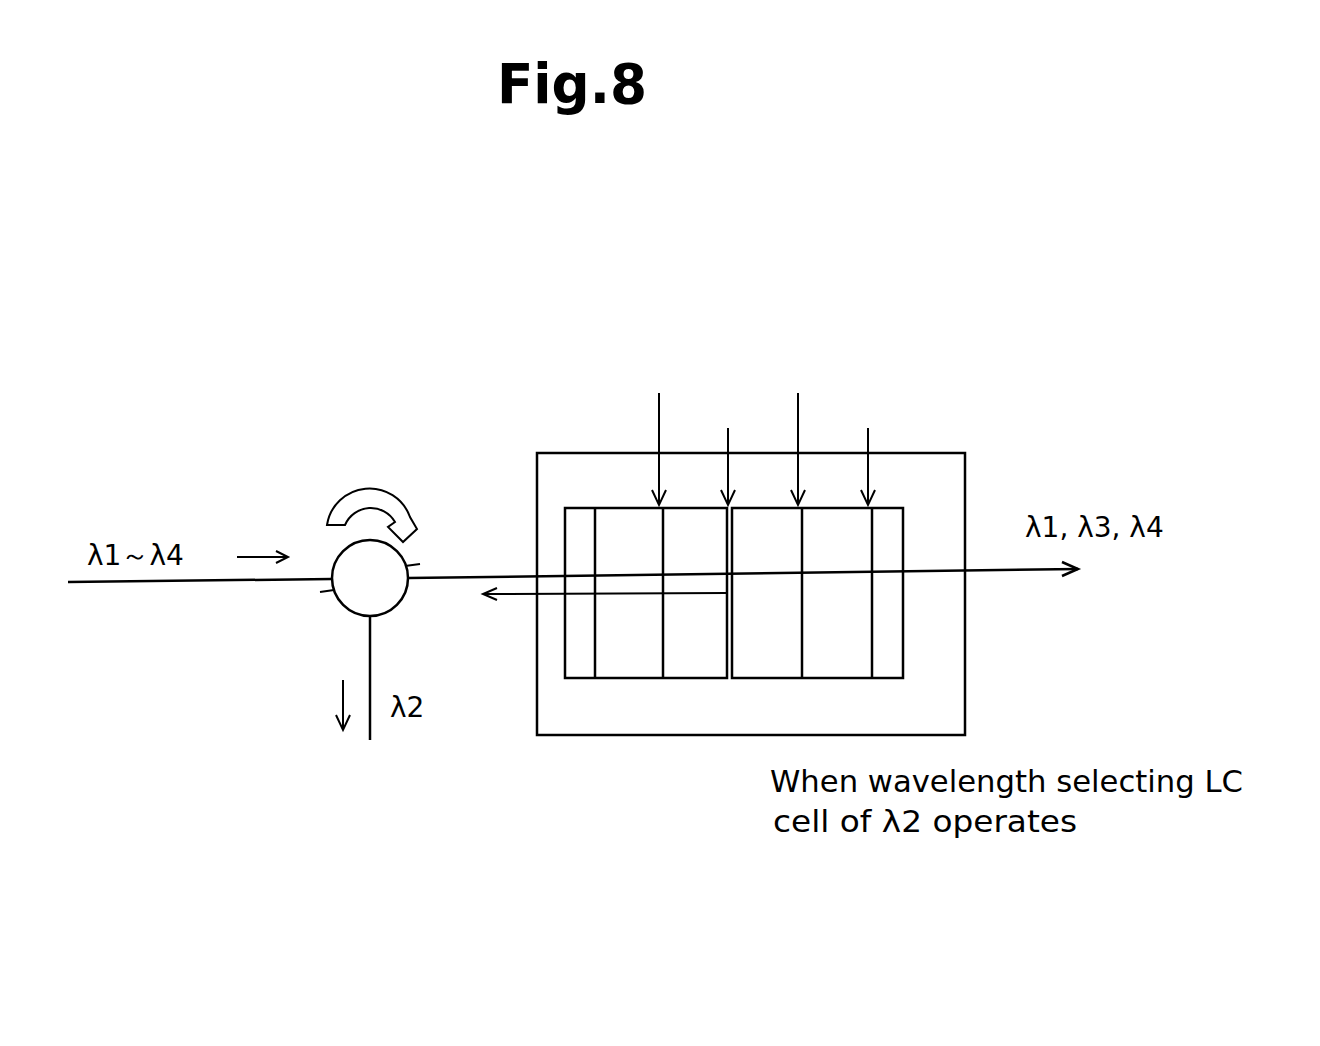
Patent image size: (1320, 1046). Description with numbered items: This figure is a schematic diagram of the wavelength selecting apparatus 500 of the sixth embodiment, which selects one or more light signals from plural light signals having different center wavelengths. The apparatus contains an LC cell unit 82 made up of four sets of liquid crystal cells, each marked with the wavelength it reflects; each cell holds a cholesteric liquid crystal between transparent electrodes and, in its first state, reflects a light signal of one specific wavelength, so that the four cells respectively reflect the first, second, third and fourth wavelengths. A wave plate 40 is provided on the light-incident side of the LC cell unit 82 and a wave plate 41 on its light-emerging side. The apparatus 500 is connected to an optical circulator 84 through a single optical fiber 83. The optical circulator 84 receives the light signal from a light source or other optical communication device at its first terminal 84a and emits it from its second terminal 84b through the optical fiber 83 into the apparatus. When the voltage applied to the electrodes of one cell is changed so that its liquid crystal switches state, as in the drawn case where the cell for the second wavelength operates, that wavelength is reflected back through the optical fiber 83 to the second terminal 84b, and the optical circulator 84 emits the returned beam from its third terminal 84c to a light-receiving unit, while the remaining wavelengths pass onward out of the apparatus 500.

The wavelength selecting apparatus 500 is at (999, 380).
The LC cell unit 82 is at (751, 466).
The wave plate 40 is at (578, 510).
The wave plate 41 is at (920, 535).
The optical fiber 83 is at (503, 575).
The optical circulator 84 is at (337, 555).
The first terminal 84a is at (327, 588).
The second terminal 84b is at (413, 568).
The third terminal 84c is at (372, 620).